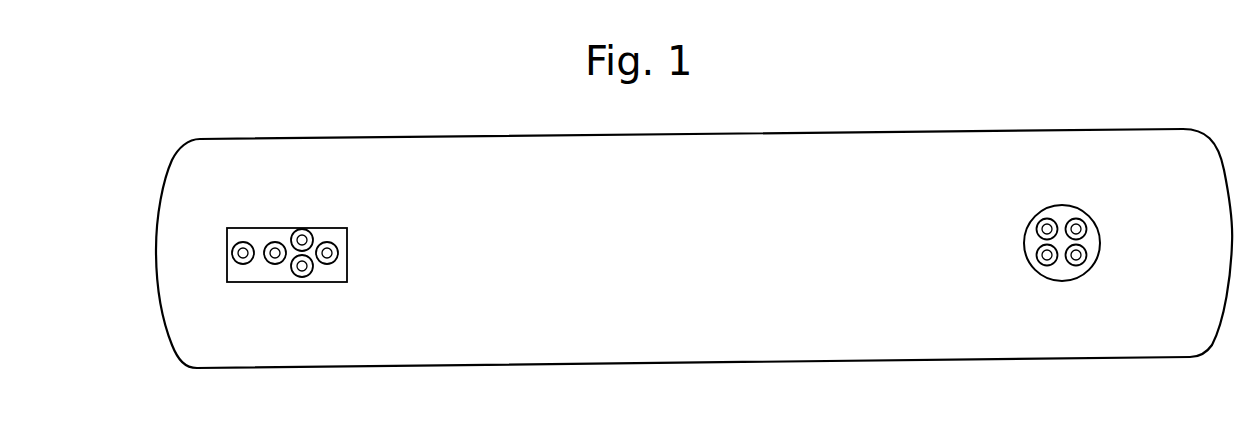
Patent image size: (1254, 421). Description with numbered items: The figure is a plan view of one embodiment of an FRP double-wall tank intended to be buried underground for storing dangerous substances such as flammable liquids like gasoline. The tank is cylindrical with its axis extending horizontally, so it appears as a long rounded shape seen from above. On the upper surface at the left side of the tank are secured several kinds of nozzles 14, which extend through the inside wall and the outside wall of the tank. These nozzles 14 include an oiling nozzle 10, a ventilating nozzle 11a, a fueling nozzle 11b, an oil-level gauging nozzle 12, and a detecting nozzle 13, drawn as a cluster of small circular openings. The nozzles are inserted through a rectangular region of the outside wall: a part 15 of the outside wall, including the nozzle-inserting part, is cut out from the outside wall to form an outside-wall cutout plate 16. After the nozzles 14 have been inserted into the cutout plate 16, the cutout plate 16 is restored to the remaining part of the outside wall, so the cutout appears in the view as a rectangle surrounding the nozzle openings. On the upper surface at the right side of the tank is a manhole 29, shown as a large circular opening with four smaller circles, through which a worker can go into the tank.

The oiling nozzle 10 is at (273, 248).
The ventilating nozzle 11a is at (300, 265).
The fueling nozzle 11b is at (304, 238).
The oil-level gauging nozzle 12 is at (329, 248).
The detecting nozzle 13 is at (239, 248).
The nozzles 14 is at (383, 197).
The part of the outside wall 15 is at (348, 257).
The outside-wall cutout plate 16 is at (324, 273).
The manhole 29 is at (1092, 243).